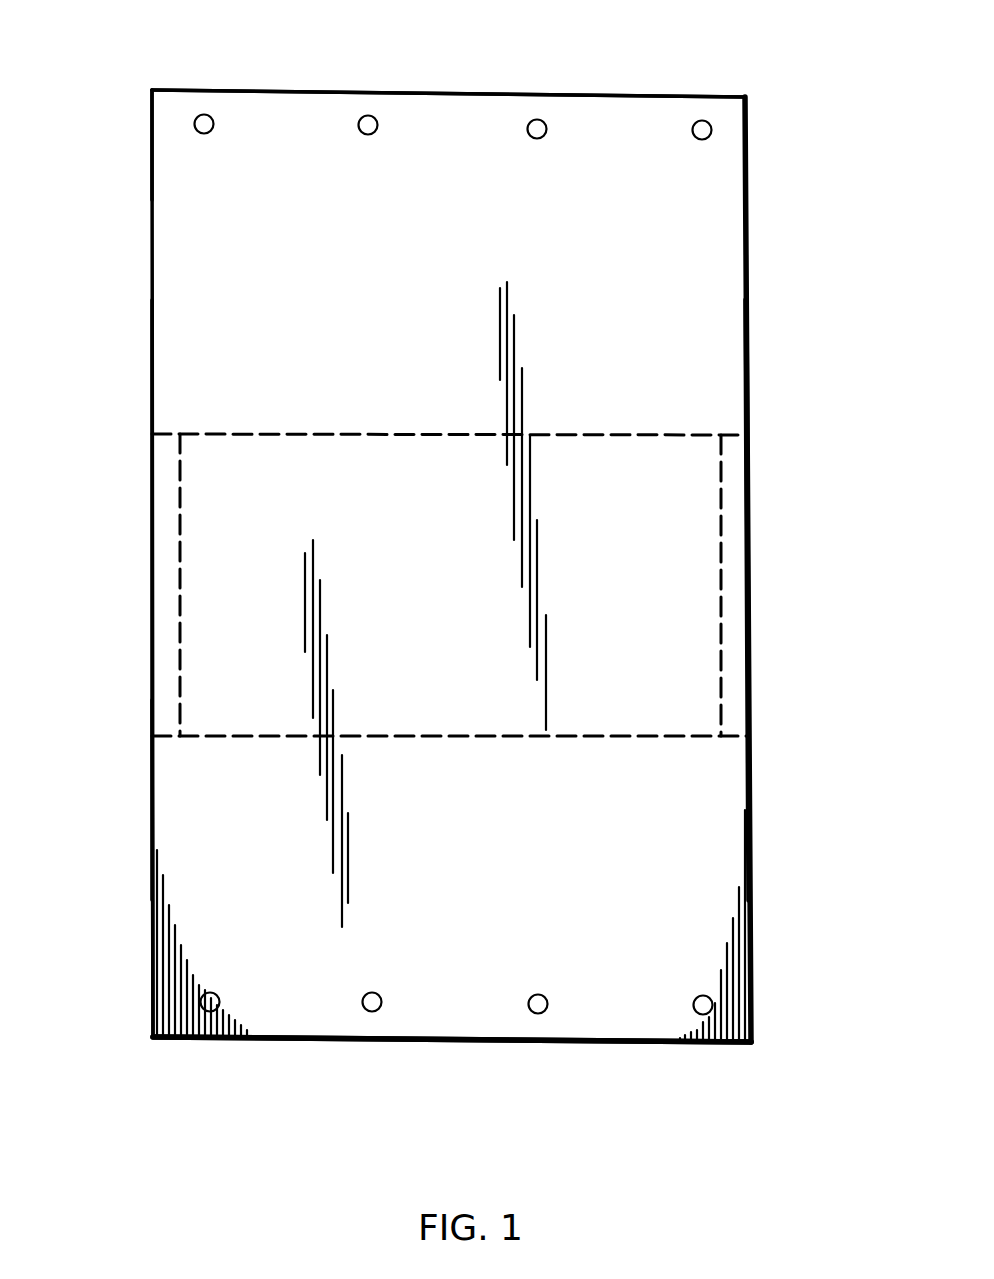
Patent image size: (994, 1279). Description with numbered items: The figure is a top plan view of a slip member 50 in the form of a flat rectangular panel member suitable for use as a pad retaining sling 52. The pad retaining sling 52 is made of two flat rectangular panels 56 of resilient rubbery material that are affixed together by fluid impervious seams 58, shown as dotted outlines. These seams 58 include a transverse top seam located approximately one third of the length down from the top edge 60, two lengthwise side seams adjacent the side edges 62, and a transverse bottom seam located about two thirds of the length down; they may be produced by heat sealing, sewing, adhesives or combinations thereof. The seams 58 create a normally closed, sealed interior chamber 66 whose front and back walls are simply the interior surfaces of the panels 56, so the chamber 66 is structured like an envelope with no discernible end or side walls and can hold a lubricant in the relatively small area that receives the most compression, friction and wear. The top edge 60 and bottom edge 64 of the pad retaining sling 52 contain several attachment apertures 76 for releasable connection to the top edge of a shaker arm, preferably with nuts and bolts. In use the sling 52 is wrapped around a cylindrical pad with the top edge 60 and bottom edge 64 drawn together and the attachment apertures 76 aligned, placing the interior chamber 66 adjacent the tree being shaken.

The slip member 50 is at (746, 97).
The pad retaining sling 52 is at (152, 90).
The flat rectangular panels 56 is at (152, 763).
The fluid impervious seams 58 is at (676, 435).
The top edge 60 is at (523, 92).
The side edges 62 is at (152, 562).
The bottom edge 64 is at (512, 1040).
The interior chamber 66 is at (630, 620).
The attachment apertures 76 is at (206, 122).